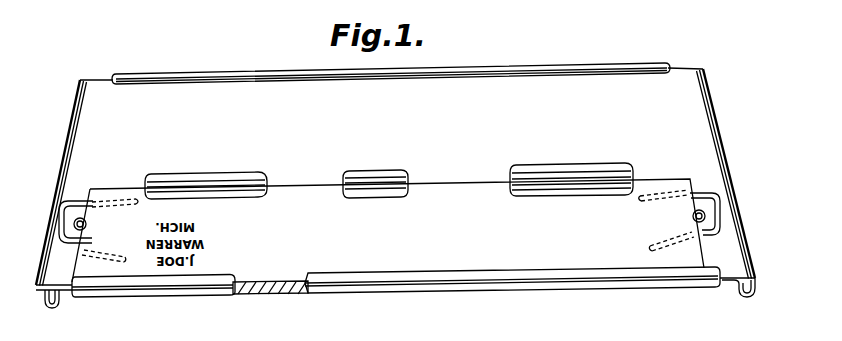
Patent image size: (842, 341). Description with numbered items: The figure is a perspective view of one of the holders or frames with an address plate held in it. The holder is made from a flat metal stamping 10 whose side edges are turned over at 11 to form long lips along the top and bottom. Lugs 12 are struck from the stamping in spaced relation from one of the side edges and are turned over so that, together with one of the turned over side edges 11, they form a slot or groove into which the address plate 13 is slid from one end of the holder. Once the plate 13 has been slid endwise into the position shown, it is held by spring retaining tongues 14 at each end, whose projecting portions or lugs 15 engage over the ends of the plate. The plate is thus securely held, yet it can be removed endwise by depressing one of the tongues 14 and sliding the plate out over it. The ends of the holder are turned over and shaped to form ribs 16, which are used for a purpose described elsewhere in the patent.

The flat metal stamping 10 is at (97, 93).
The turned over side edges 11 is at (473, 73).
The lugs 12 is at (258, 197).
The plate 13 is at (290, 285).
The spring retaining tongues 14 is at (77, 207).
The projecting portions or lugs 15 is at (84, 224).
The ribs 16 is at (58, 306).